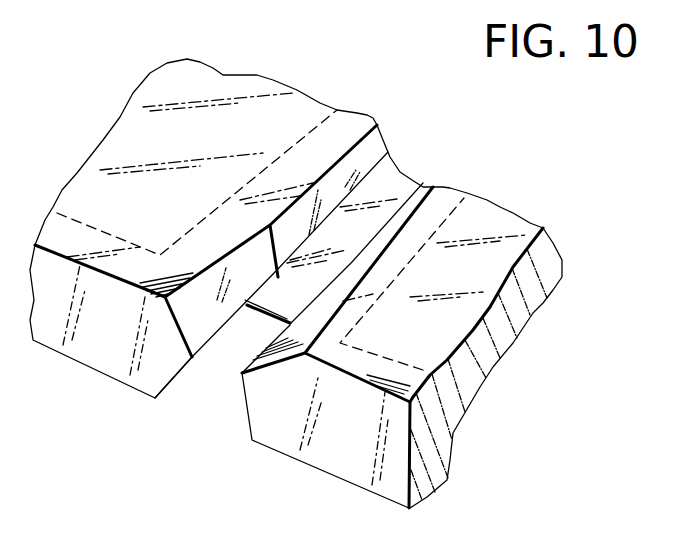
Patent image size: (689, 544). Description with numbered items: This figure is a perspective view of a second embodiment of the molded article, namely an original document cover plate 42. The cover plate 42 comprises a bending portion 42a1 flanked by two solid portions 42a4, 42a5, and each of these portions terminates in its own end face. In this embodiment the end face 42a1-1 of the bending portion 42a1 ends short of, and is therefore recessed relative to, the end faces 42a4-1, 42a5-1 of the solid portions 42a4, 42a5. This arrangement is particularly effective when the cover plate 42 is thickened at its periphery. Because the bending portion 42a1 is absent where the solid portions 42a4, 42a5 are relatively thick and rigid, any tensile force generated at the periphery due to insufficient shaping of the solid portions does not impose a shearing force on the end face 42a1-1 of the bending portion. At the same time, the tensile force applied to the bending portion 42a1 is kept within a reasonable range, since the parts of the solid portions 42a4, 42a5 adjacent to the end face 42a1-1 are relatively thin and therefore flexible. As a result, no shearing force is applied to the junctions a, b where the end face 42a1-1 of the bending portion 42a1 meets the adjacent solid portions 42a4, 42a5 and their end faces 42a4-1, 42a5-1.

The original document cover plate 42 is at (483, 220).
The bending portion 42a1 is at (403, 172).
The solid portion 42a4 is at (235, 263).
The solid portion 42a5 is at (313, 317).
The end face of solid portion 42a4-1 is at (90, 340).
The end face of bending portion 42a1-1 is at (257, 327).
The end face of solid portion 42a5-1 is at (330, 447).
The junction a is at (243, 318).
The junction b is at (280, 330).